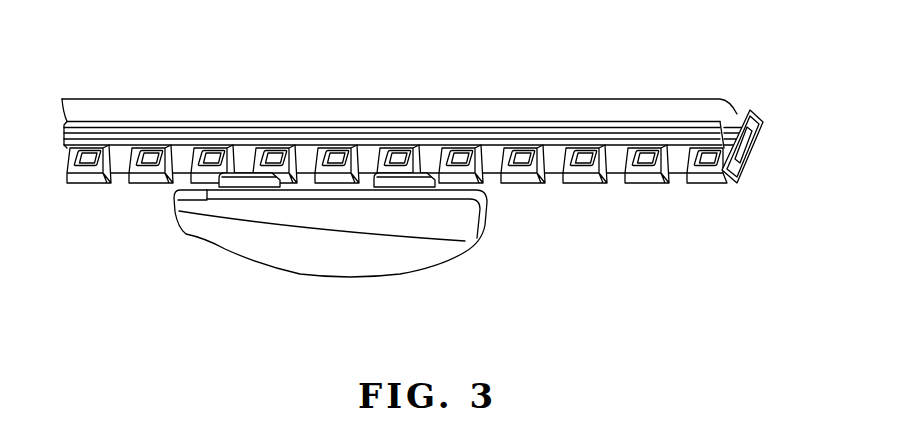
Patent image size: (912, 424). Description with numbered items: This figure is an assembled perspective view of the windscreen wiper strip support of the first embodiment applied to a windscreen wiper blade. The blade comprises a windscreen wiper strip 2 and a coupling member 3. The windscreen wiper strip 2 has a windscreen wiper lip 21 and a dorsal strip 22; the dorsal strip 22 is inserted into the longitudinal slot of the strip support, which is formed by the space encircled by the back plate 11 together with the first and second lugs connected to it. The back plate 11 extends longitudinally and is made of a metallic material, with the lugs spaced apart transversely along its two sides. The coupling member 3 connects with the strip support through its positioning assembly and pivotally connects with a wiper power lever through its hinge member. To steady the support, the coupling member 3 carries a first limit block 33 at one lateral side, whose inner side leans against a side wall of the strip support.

The windscreen wiper strip 2 is at (735, 118).
The windscreen wiper lip 21 is at (419, 107).
The dorsal strip 22 is at (738, 168).
The back plate 11 is at (727, 185).
The coupling member 3 is at (337, 262).
The first limit block 33 is at (230, 186).